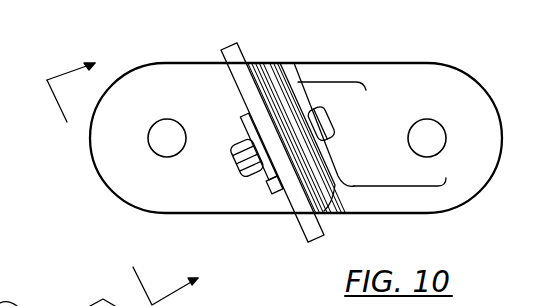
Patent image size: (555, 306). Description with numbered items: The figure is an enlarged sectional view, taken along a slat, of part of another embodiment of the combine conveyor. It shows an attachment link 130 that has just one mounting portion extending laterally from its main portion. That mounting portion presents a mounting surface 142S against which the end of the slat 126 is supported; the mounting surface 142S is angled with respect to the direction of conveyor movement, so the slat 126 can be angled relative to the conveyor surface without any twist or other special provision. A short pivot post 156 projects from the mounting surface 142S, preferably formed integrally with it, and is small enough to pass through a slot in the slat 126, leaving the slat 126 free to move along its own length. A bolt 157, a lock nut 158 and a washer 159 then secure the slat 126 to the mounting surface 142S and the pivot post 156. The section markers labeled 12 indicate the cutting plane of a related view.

The section line indicator 12 is at (122, 184).
The slat 126 is at (315, 237).
The attachment link 130 is at (112, 162).
The mounting surface 142S is at (298, 170).
The pivot post 156 is at (262, 178).
The bolt 157 is at (238, 164).
The lock nut 158 is at (325, 132).
The washer 159 is at (240, 118).